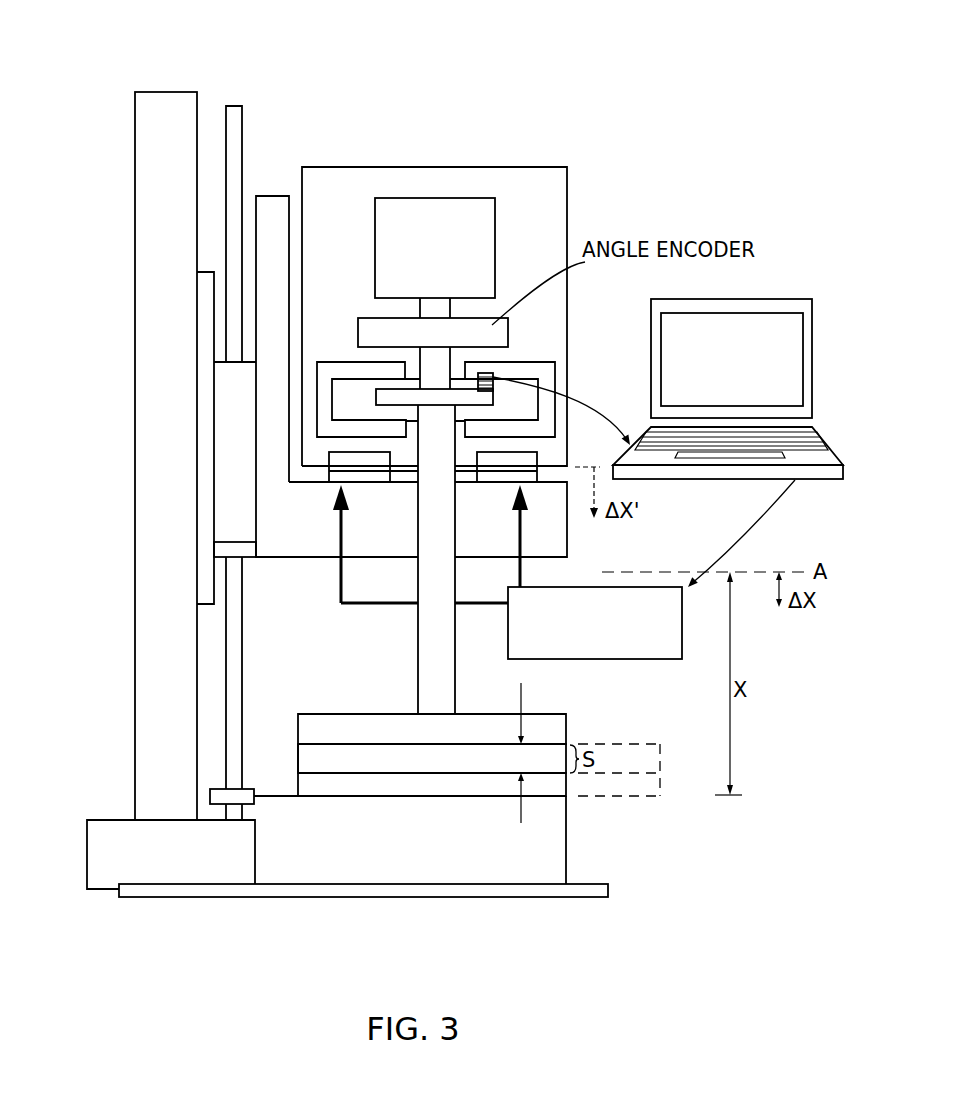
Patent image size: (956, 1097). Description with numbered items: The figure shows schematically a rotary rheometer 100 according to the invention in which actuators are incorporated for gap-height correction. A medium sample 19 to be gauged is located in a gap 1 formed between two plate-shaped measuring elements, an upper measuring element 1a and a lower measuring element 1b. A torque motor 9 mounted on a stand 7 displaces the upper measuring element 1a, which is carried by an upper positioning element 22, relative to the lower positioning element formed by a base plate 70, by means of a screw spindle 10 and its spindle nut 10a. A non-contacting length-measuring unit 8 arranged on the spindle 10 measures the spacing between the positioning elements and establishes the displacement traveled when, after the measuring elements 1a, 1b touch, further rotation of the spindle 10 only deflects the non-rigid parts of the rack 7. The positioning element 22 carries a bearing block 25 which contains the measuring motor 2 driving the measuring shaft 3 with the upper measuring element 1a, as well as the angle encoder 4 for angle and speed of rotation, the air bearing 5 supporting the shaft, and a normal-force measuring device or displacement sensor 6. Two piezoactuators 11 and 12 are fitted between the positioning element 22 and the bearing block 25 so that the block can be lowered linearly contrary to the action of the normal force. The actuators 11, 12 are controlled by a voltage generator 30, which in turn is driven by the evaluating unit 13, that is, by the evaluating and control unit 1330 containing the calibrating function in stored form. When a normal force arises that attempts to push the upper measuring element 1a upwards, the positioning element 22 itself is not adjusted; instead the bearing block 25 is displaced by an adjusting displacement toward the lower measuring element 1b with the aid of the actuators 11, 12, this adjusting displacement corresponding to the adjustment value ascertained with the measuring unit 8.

The rotary rheometer 100 is at (317, 90).
The stand 7 is at (170, 318).
The screw spindle 10 is at (225, 117).
The spindle nut 10a is at (227, 428).
The length-measuring unit 8 is at (243, 549).
The torque motor 9 is at (105, 825).
The base plate 70 is at (555, 855).
The bearing block 25 is at (542, 180).
The upper positioning element 22 is at (557, 547).
The measuring motor 2 is at (487, 282).
The angle encoder 4 is at (433, 332).
The measuring shaft 3 is at (418, 632).
The air bearing 5 is at (525, 408).
The normal-force measuring device 6 is at (492, 374).
The piezoactuator 12 is at (370, 481).
The piezoactuator 11 is at (501, 481).
The voltage generator 30 is at (515, 622).
The evaluating unit 13 is at (728, 325).
The evaluating and control unit 1330 is at (728, 466).
The upper measuring element 1a is at (352, 713).
The gap 1 is at (432, 753).
The medium sample 19 is at (547, 750).
The lower measuring element 1b is at (647, 787).